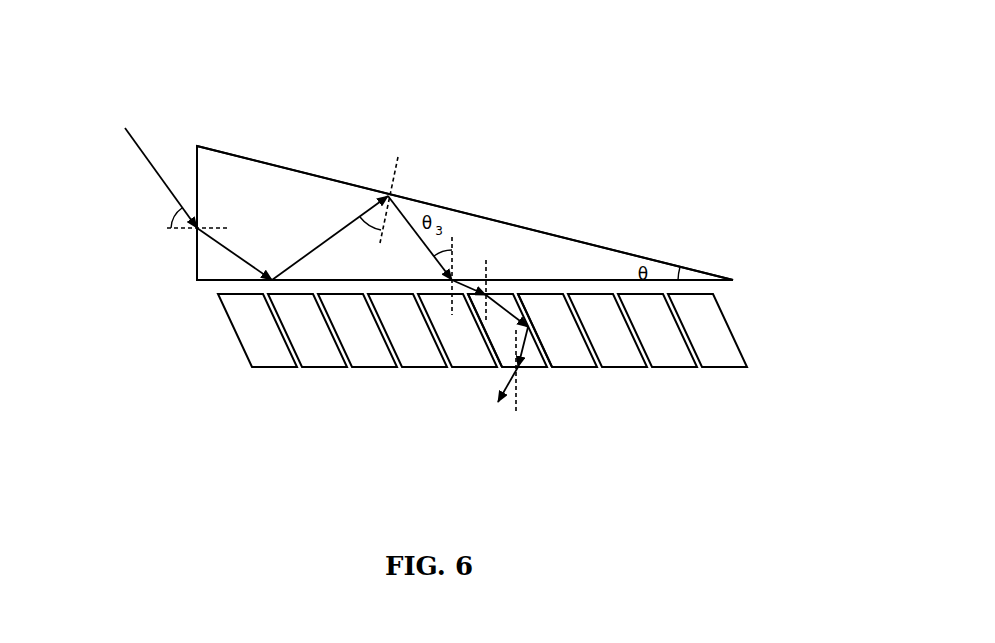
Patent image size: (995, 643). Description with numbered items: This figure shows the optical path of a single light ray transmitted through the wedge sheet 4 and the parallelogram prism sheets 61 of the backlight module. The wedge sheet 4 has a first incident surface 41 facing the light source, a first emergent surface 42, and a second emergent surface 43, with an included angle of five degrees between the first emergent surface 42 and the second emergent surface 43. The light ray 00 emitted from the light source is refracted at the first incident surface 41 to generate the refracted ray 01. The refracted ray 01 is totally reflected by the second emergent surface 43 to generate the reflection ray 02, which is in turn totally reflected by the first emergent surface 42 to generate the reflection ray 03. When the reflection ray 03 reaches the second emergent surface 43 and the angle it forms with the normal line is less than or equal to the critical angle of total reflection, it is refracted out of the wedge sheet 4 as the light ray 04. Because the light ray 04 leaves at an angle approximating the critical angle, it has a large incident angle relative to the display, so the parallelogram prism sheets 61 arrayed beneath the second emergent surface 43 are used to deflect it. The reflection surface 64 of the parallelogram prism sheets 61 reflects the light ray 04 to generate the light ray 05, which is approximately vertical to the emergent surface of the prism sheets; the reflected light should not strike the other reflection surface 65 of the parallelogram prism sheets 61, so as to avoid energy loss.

The wedge sheet 4 is at (215, 258).
The first incident surface 41 is at (195, 170).
The first emergent surface 42 is at (532, 225).
The second emergent surface 43 is at (213, 282).
The parallelogram prism sheets 61 is at (710, 326).
The reflection surface 64 is at (539, 337).
The other reflection surface 65 is at (492, 345).
The light ray 00 is at (161, 170).
The refracted ray 01 is at (234, 254).
The reflection ray 02 is at (335, 218).
The reflection ray 03 is at (420, 255).
The light ray 04 is at (490, 292).
The light ray 05 is at (506, 377).